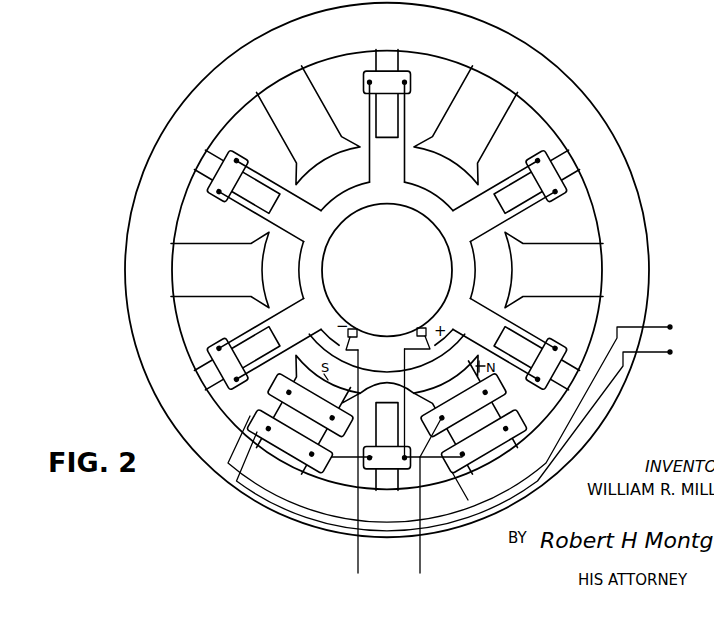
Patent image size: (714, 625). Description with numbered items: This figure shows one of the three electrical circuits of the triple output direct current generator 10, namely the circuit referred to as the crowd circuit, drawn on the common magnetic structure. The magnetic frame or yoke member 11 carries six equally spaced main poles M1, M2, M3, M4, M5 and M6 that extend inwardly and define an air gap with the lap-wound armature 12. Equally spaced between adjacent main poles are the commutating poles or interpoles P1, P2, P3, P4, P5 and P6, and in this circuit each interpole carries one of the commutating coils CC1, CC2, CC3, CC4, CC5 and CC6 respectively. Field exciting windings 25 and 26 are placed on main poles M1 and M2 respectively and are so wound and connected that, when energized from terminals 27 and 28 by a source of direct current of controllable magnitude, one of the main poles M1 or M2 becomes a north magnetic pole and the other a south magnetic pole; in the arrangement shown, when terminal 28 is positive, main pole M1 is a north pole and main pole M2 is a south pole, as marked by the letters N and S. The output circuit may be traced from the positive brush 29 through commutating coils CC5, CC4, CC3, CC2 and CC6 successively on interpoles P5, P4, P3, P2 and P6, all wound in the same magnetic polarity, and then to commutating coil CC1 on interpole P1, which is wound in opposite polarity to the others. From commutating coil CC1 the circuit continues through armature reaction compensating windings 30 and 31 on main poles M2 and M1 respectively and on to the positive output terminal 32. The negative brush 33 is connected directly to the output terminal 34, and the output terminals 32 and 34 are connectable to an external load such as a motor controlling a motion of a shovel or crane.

The multiple output generator 10 is at (194, 87).
The magnetic frame or yoke member 11 is at (647, 248).
The armature 12 is at (441, 233).
The main pole M1 is at (499, 410).
The main pole M2 is at (317, 438).
The main pole M3 is at (226, 246).
The main pole M4 is at (290, 134).
The main pole M5 is at (464, 102).
The main pole M6 is at (566, 253).
The interpole P1 is at (394, 490).
The interpole P2 is at (205, 376).
The interpole P3 is at (278, 204).
The interpole P4 is at (391, 140).
The interpole P5 is at (496, 205).
The interpole P6 is at (512, 338).
The commutating coil CC1 is at (362, 462).
The commutating coil CC2 is at (223, 345).
The commutating coil CC3 is at (223, 200).
The commutating coil CC4 is at (362, 88).
The commutating coil CC5 is at (545, 160).
The commutating coil CC6 is at (555, 347).
The field exciting winding 25 is at (490, 391).
The field exciting winding 26 is at (289, 379).
The terminal 27 is at (671, 326).
The terminal 28 is at (671, 352).
The positive brush 29 is at (422, 338).
The armature reaction compensating winding 30 is at (260, 418).
The armature reaction compensating winding 31 is at (518, 428).
The positive output terminal 32 is at (420, 573).
The negative brush 33 is at (355, 338).
The output terminal 34 is at (358, 573).